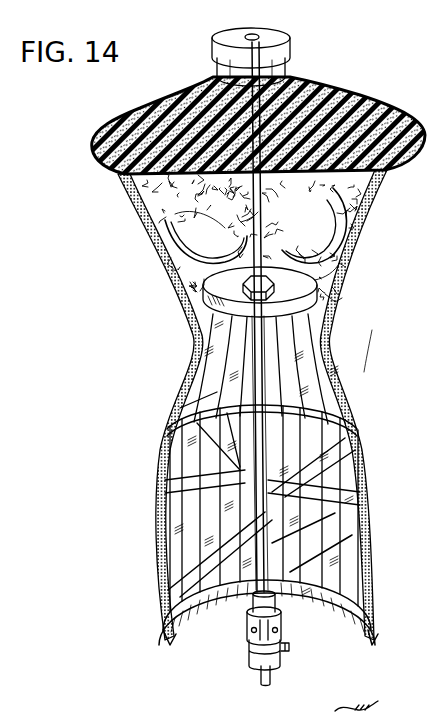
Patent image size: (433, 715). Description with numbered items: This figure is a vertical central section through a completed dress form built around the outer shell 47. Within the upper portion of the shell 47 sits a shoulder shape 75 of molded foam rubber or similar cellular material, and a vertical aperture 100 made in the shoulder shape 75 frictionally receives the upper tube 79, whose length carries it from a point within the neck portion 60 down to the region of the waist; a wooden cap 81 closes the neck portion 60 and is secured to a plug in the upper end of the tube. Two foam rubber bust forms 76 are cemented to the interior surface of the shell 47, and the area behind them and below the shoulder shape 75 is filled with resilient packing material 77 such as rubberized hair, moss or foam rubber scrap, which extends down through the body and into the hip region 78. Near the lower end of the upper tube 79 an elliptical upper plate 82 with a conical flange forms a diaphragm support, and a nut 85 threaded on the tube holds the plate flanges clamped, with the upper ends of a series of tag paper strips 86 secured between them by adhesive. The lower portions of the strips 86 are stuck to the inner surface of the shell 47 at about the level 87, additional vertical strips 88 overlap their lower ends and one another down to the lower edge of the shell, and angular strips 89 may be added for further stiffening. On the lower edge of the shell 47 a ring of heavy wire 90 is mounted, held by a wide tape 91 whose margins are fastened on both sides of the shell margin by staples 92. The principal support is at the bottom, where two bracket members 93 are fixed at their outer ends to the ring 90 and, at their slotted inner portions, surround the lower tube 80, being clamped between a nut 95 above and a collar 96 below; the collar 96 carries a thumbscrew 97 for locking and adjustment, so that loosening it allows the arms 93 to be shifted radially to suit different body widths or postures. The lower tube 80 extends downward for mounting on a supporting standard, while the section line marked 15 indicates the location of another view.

The section line for FIG. 15 is at (247, 252).
The shell structure 47 is at (135, 207).
The neck portion 60 is at (290, 58).
The shoulder shape 75 is at (92, 146).
The bust forms 76 is at (180, 250).
The packing material 77 is at (182, 215).
The hip region 78 is at (342, 368).
The upper tube 79 is at (256, 192).
The lower tube 80 is at (258, 463).
The cap 81 is at (272, 36).
The upper plate 82 is at (203, 300).
The nut 85 is at (275, 292).
The strips 86 is at (192, 407).
The level 87 is at (167, 467).
The vertical strips 88 is at (207, 520).
The angular strips 89 is at (362, 483).
The ring 90 is at (169, 645).
The tape 91 is at (163, 637).
The staples 92 is at (190, 608).
The bracket members 93 is at (276, 601).
The nut 95 is at (283, 626).
The collar 96 is at (253, 658).
The thumbscrew 97 is at (290, 648).
The vertical aperture 100 is at (210, 92).